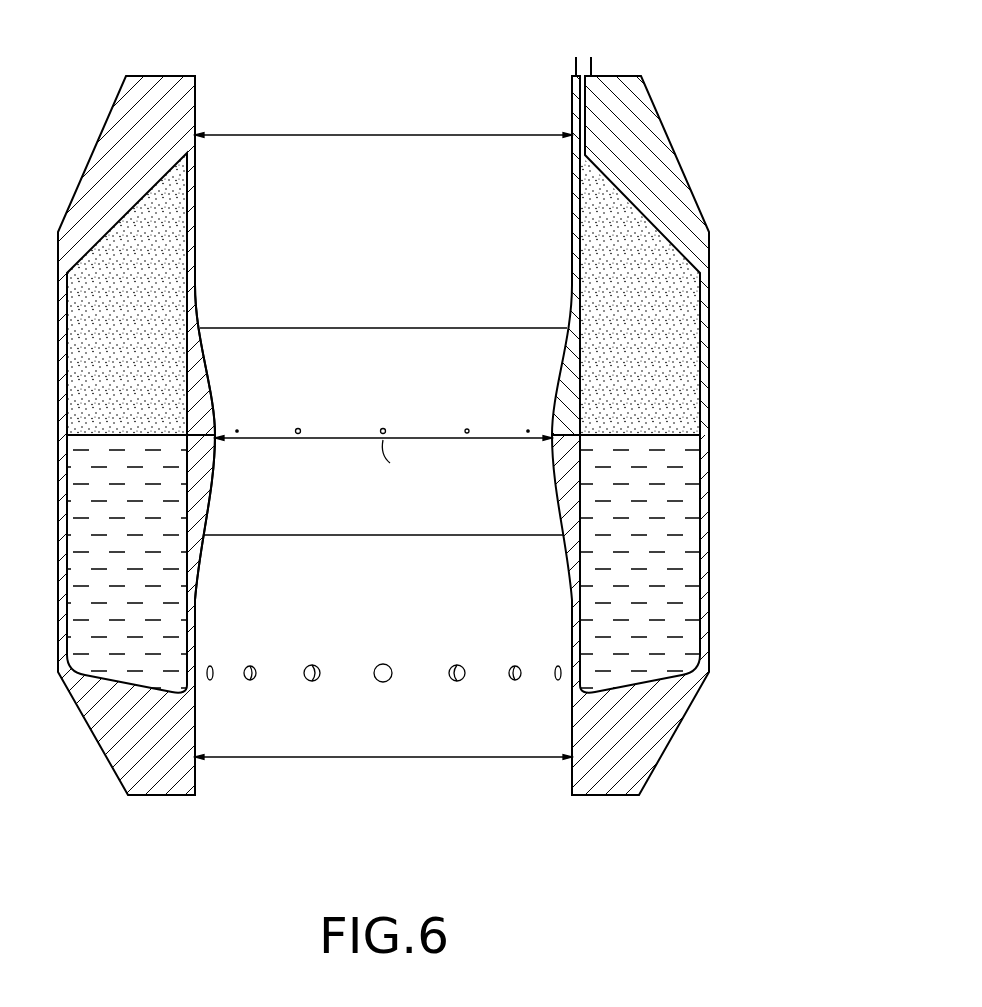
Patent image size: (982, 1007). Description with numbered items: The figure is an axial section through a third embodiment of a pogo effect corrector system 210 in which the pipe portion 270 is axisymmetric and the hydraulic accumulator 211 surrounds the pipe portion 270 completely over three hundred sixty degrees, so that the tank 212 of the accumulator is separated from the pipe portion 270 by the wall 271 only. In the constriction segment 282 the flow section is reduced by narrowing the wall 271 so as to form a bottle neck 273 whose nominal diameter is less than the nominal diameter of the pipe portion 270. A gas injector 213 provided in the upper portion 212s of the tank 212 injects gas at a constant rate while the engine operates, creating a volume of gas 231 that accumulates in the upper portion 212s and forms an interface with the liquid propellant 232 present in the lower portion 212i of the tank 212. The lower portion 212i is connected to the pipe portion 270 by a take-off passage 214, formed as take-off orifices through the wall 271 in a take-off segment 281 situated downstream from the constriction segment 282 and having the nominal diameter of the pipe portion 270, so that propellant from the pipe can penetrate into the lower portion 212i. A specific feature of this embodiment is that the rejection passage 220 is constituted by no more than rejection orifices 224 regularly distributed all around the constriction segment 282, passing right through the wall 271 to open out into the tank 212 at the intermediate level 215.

The pogo effect corrector system 210 is at (728, 92).
The hydraulic accumulator 211 is at (740, 280).
The tank 212 is at (705, 313).
The upper portion of the tank 212s is at (617, 334).
The lower portion of the tank 212i is at (619, 559).
The gas injector 213 is at (583, 57).
The take-off passage 214 is at (457, 665).
The intermediate level 215 is at (657, 436).
The rejection passage 220 is at (202, 420).
The rejection orifices 224 is at (383, 430).
The volume of gas 231 is at (675, 385).
The liquid propellant 232 is at (687, 593).
The pipe portion 270 is at (247, 105).
The wall 271 is at (572, 210).
The bottle neck 273 is at (207, 452).
The take-off segment 281 is at (435, 685).
The constriction segment 282 is at (412, 425).